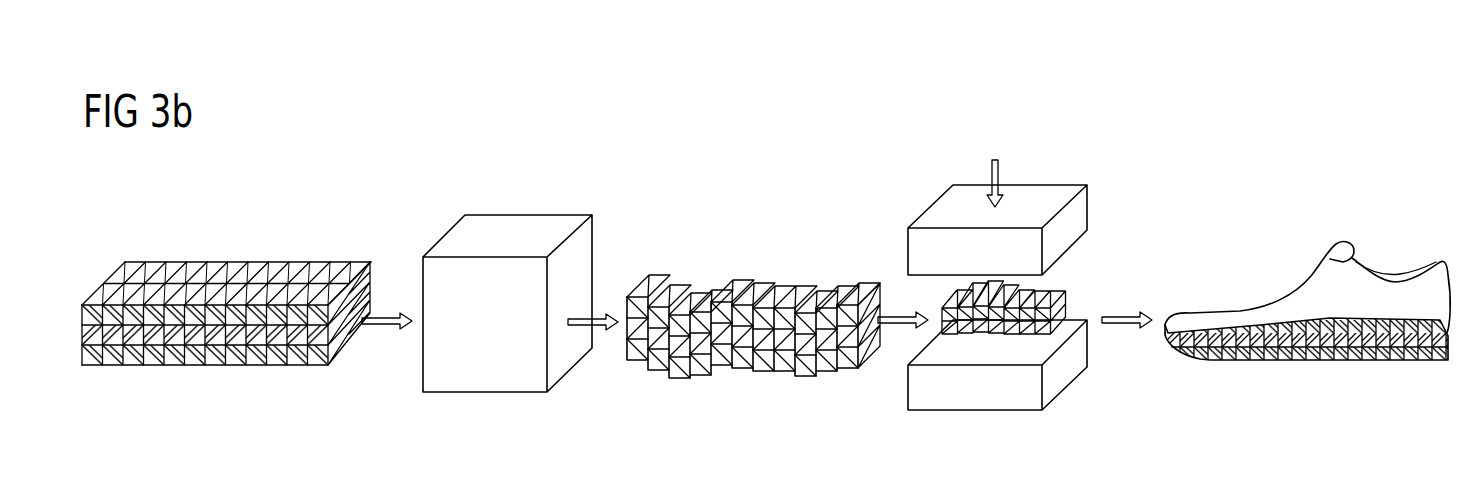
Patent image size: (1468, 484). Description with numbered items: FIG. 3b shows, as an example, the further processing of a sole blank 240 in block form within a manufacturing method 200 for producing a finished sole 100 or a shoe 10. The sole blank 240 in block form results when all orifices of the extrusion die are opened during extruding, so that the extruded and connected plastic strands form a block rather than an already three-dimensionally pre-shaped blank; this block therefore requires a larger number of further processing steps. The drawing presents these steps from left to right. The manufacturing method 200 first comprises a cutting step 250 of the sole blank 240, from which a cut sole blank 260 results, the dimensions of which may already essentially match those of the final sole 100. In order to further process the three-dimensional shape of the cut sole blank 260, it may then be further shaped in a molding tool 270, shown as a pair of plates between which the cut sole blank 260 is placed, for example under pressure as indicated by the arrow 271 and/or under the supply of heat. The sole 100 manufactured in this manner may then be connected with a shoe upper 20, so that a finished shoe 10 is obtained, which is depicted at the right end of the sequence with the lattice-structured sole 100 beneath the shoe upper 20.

The manufacturing method 200 is at (352, 174).
The sole blank 240 is at (245, 243).
The cutting step 250 is at (513, 225).
The cut sole blank 260 is at (766, 264).
The molding tool 270 is at (921, 250).
The arrow 271 is at (995, 160).
The shoe 10 is at (1388, 244).
The shoe upper 20 is at (1237, 322).
The sole 100 is at (1343, 345).